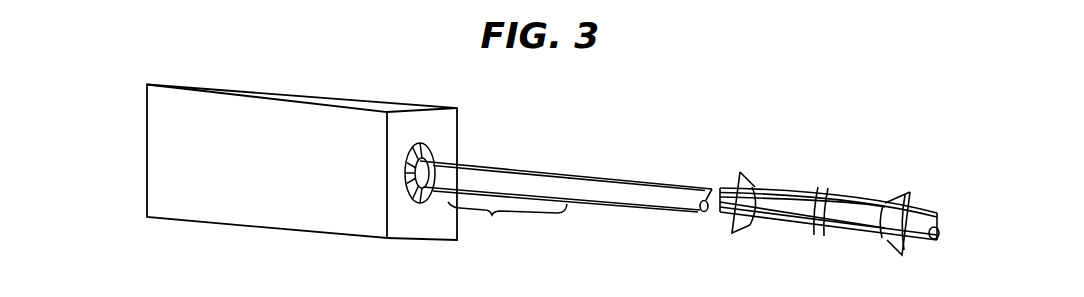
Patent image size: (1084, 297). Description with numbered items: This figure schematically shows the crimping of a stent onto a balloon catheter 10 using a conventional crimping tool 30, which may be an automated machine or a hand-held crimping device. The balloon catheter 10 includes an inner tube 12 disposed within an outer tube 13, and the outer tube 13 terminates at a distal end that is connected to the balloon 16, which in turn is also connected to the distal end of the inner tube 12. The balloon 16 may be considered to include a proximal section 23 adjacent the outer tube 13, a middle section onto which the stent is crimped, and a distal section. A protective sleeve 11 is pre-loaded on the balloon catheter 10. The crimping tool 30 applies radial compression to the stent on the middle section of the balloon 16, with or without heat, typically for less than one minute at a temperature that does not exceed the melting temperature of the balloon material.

The crimping tool 30 is at (328, 80).
The balloon catheter 10 is at (566, 174).
The balloon 16 is at (518, 163).
The outer tube 13 is at (657, 178).
The inner tube 12 is at (673, 196).
The proximal section 23 is at (507, 223).
The protective sleeve 11 is at (803, 189).